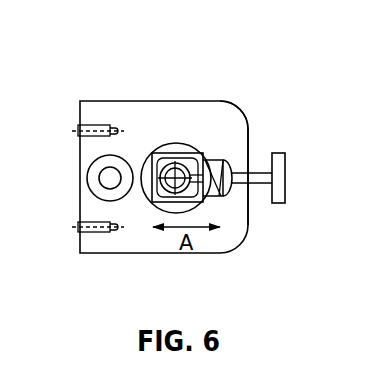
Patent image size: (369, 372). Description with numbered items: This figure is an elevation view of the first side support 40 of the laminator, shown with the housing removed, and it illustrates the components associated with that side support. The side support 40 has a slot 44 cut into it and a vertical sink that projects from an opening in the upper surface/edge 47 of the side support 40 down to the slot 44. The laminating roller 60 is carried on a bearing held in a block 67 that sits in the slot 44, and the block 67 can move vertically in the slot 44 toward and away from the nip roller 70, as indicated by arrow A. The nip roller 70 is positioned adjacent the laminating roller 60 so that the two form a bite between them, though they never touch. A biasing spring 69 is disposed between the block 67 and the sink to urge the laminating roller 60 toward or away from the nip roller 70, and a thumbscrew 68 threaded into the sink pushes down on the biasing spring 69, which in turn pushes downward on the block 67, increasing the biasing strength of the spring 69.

The first side support 40 is at (115, 114).
The slot 44 is at (228, 126).
The upper surface/edge 47 is at (250, 122).
The laminating roller 60 is at (156, 141).
The block 67 is at (172, 152).
The thumbscrew 68 is at (218, 76).
The biasing spring 69 is at (233, 215).
The nip roller 70 is at (132, 205).